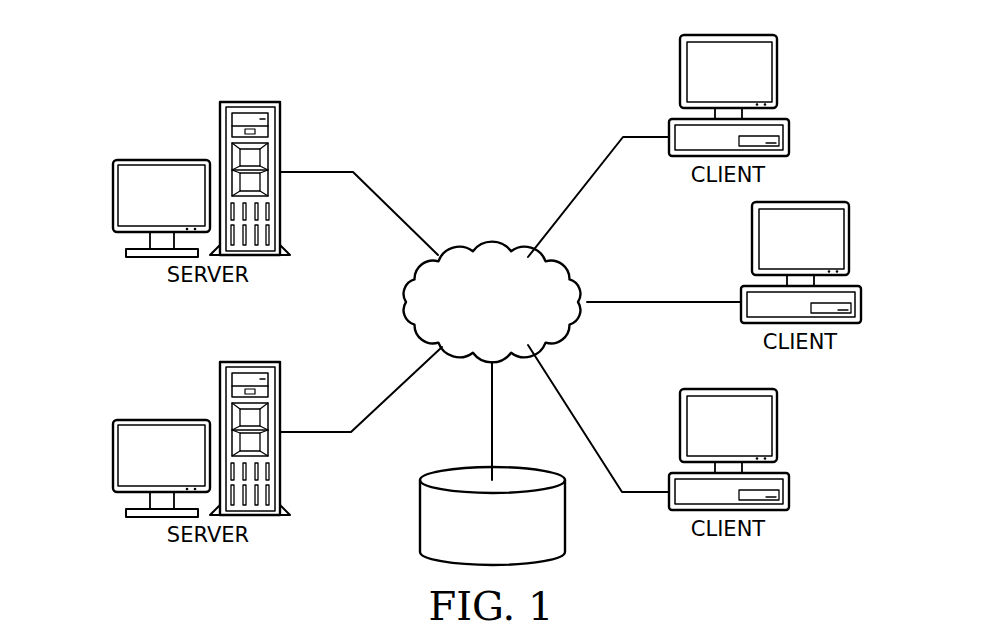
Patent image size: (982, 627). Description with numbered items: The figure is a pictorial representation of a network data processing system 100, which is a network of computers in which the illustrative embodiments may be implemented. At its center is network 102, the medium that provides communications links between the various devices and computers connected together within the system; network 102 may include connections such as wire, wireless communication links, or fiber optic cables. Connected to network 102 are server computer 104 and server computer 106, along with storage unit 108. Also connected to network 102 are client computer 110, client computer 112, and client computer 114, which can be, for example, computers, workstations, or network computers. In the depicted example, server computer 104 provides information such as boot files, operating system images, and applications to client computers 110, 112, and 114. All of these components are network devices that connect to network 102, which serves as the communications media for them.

The network data processing system 100 is at (356, 80).
The network 102 is at (462, 251).
The server computer 104 is at (113, 198).
The server computer 106 is at (113, 455).
The storage unit 108 is at (420, 515).
The client computer 110 is at (789, 128).
The client computer 112 is at (861, 311).
The client computer 114 is at (790, 499).